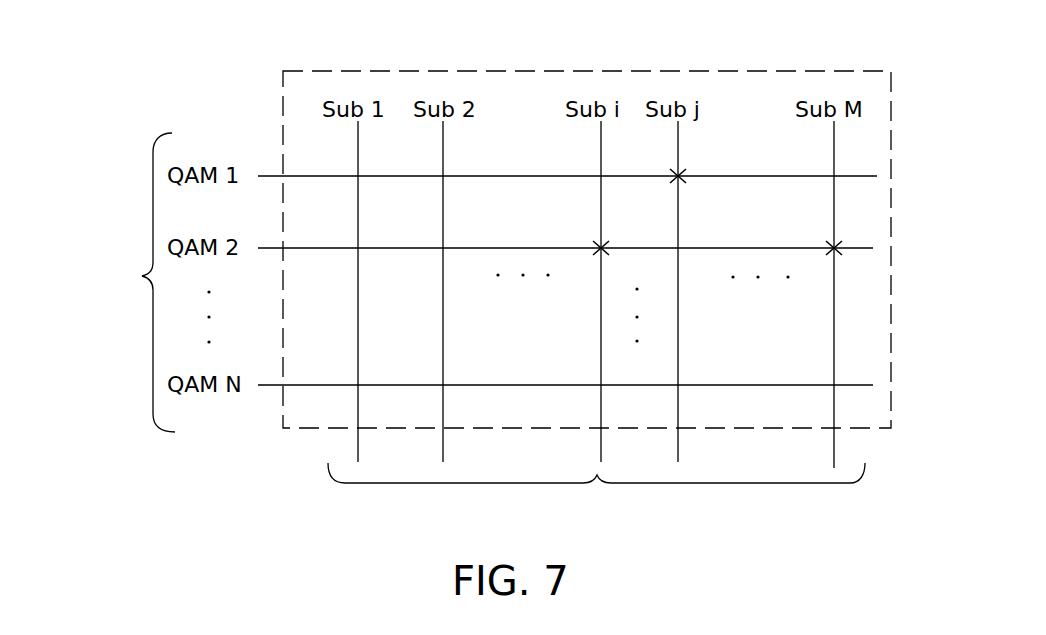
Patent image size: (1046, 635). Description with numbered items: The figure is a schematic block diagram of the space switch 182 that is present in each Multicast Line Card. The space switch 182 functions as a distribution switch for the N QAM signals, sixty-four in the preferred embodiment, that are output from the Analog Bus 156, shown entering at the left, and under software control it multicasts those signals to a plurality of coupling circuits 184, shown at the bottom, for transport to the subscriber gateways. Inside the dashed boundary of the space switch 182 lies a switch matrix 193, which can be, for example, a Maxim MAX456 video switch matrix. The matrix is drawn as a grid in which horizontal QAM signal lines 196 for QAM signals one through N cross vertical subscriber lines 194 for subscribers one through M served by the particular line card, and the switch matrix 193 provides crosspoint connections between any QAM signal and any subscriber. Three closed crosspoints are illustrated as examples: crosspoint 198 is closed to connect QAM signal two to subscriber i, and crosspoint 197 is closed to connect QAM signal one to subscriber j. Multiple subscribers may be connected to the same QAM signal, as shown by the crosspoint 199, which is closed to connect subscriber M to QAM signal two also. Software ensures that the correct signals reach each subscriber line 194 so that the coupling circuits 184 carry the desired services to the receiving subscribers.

The space switch 182 is at (535, 70).
The coupling circuits 184 is at (596, 495).
The switch matrix 193 is at (534, 334).
The subscriber lines 194 is at (357, 152).
The QAM signal lines 196 is at (327, 178).
The crosspoint 197 is at (681, 178).
The crosspoint 198 is at (599, 244).
The crosspoint 199 is at (838, 250).
The Analog Bus 156 is at (111, 282).